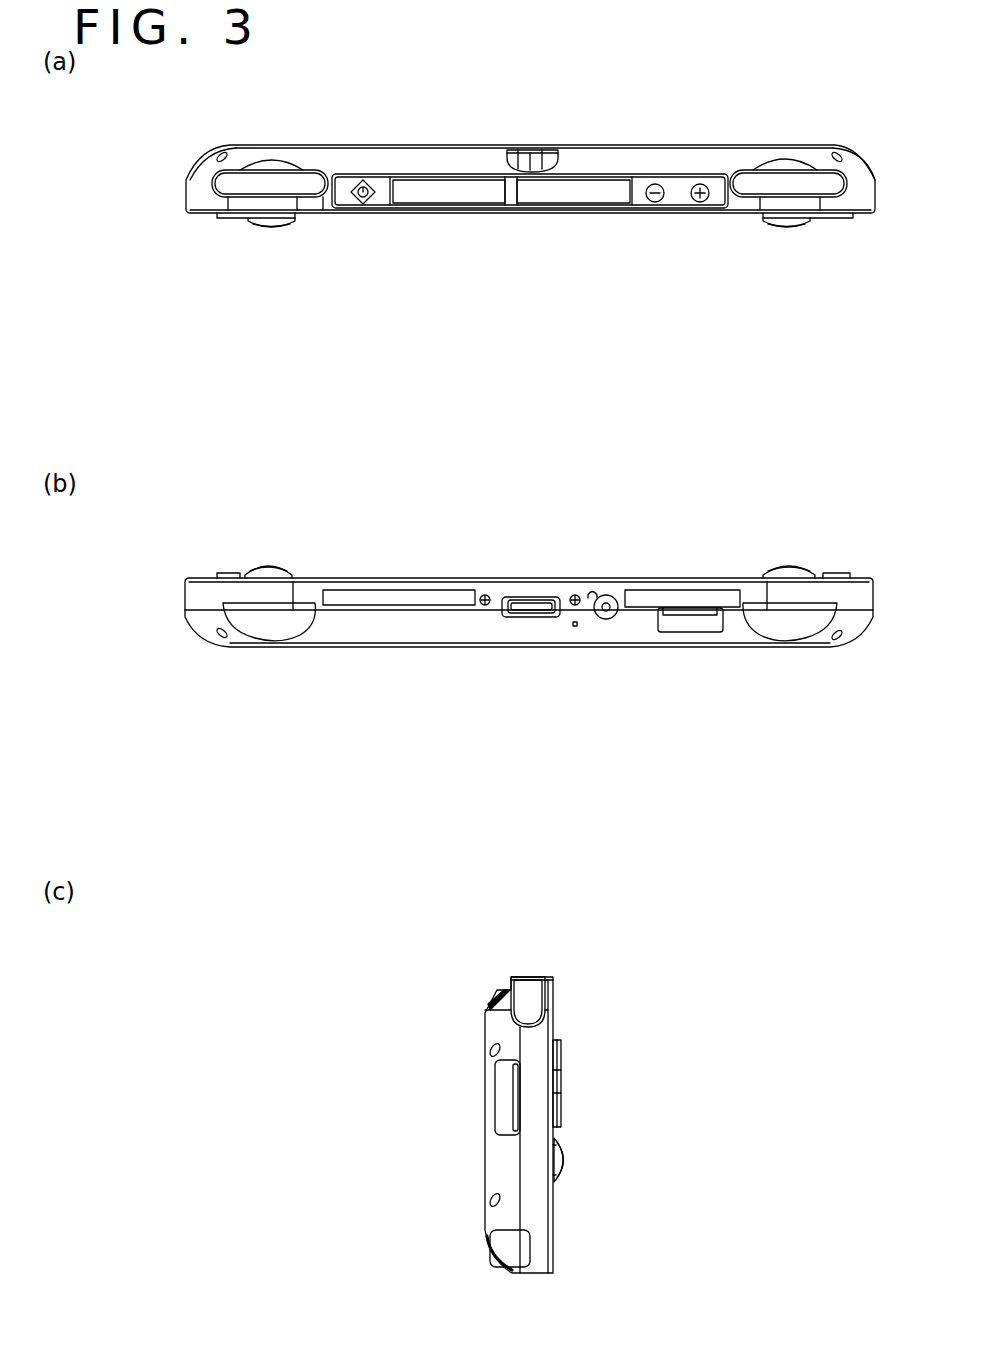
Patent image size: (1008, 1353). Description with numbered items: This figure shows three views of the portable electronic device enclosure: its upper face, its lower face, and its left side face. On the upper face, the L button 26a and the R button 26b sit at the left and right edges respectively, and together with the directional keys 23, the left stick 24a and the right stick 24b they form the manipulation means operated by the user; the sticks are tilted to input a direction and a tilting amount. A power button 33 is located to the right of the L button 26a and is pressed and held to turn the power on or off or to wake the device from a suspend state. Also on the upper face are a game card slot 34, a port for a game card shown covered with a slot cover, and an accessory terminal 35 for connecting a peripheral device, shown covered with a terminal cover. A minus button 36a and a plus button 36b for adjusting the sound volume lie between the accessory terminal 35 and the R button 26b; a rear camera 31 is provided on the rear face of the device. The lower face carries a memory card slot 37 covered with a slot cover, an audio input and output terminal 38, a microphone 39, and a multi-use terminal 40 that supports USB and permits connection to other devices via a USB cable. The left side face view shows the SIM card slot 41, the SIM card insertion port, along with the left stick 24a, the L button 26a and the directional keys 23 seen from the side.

The directional keys 23 is at (561, 1085).
The left stick 24a is at (268, 230).
The right stick 24b is at (787, 230).
The L button 26a is at (287, 184).
The R button 26b is at (790, 183).
The rear camera 31 is at (536, 149).
The power button 33 is at (365, 206).
The game card slot 34 is at (450, 189).
The accessory terminal 35 is at (570, 190).
The minus button 36a is at (657, 206).
The plus button 36b is at (703, 184).
The memory card slot 37 is at (690, 632).
The audio input and output terminal 38 is at (609, 596).
The microphone 39 is at (577, 628).
The multi-use terminal 40 is at (528, 596).
The SIM card slot 41 is at (500, 1108).